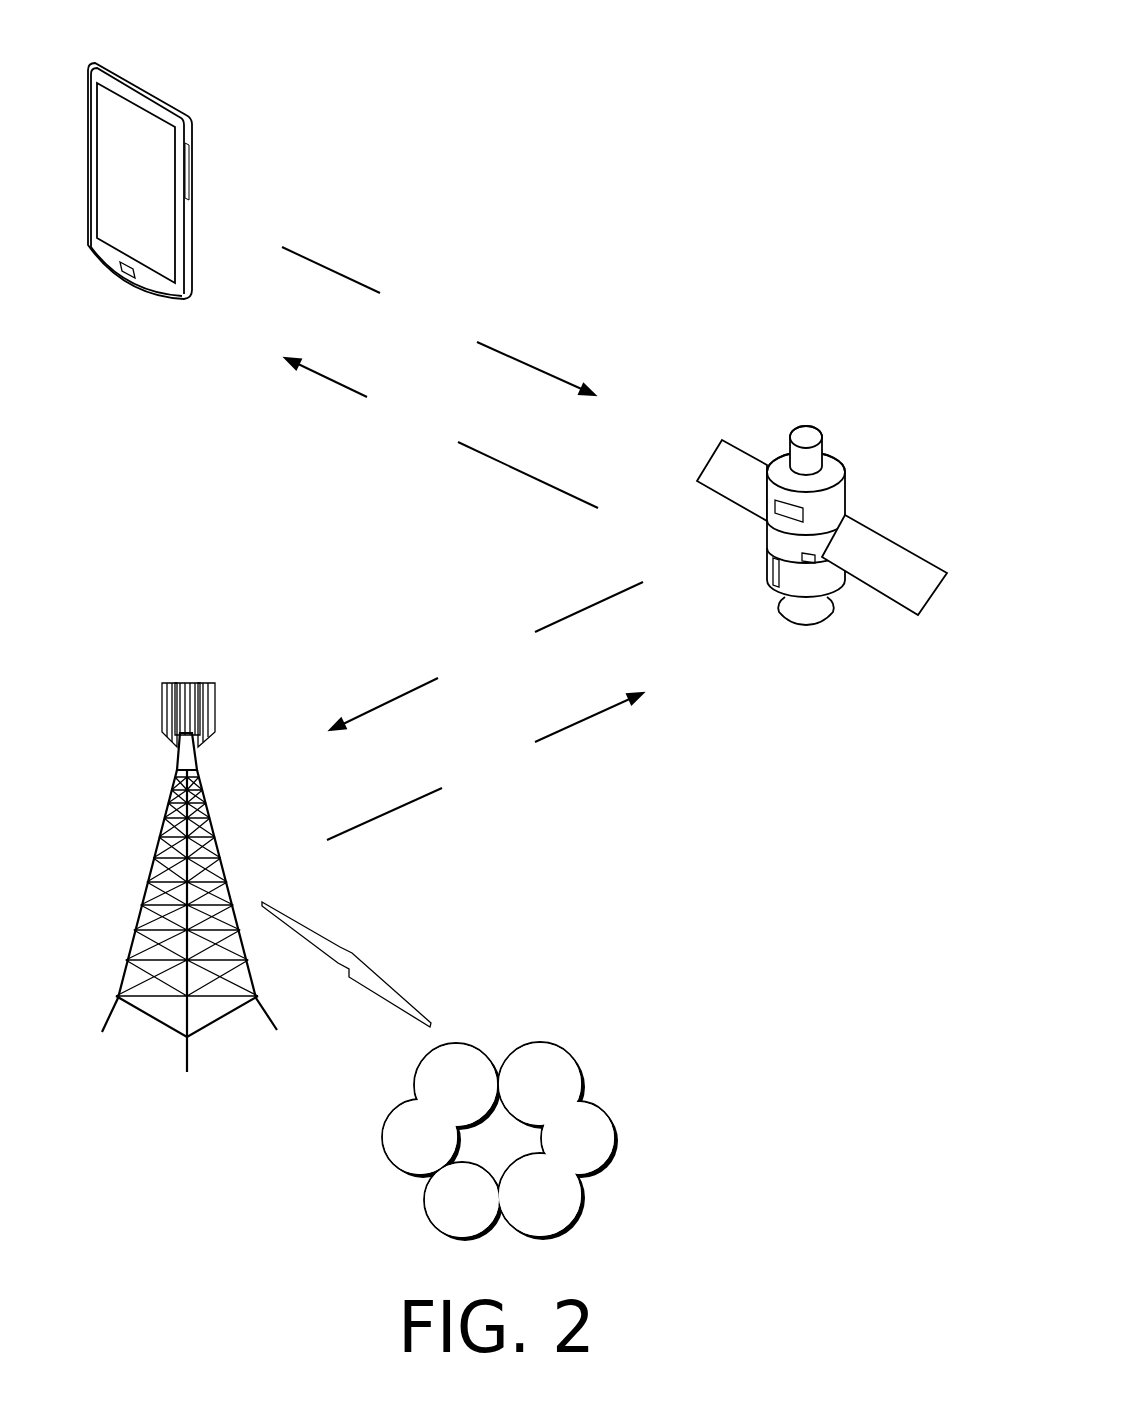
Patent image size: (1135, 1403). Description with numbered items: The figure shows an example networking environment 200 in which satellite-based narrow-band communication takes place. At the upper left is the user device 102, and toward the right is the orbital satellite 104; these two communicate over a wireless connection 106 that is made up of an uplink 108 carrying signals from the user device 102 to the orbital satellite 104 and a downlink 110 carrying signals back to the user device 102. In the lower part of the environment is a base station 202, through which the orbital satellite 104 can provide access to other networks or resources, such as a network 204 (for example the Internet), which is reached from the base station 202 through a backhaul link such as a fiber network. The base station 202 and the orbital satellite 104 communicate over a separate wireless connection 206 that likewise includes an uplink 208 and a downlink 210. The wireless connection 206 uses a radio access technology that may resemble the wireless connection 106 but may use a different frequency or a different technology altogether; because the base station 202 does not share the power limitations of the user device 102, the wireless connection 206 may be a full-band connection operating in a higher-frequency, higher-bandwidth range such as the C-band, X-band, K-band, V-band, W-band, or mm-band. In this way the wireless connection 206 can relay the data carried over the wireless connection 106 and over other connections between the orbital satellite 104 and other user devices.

The networking environment 200 is at (860, 62).
The user device 102 is at (132, 208).
The orbital satellite 104 is at (822, 580).
The wireless connection 106 is at (490, 240).
The uplink 108 is at (438, 321).
The downlink 110 is at (441, 433).
The base station 202 is at (189, 906).
The network 204 is at (500, 1141).
The wireless connection 206 is at (408, 610).
The uplink 208 is at (535, 662).
The downlink 210 is at (443, 759).